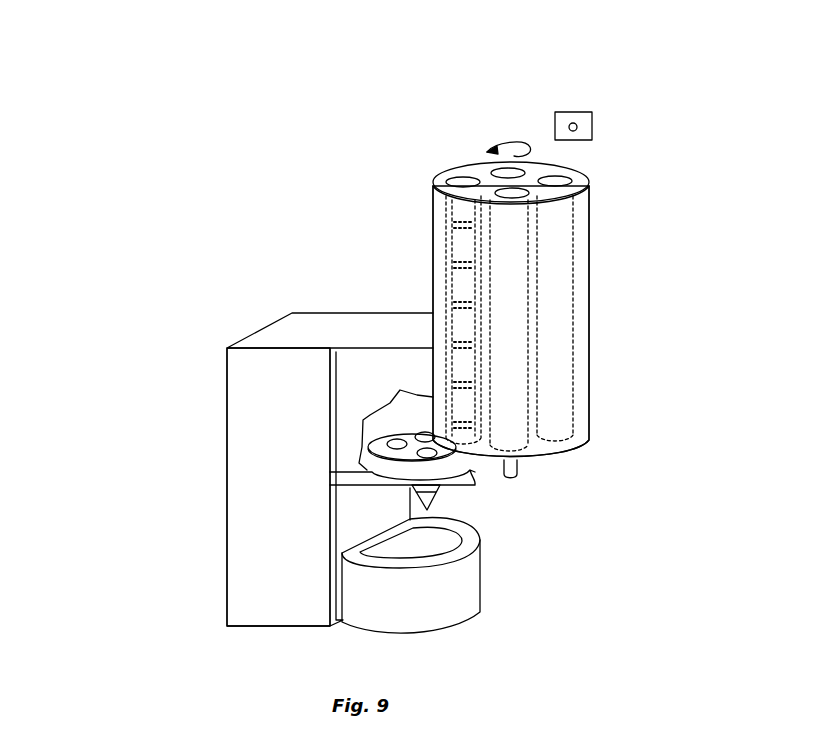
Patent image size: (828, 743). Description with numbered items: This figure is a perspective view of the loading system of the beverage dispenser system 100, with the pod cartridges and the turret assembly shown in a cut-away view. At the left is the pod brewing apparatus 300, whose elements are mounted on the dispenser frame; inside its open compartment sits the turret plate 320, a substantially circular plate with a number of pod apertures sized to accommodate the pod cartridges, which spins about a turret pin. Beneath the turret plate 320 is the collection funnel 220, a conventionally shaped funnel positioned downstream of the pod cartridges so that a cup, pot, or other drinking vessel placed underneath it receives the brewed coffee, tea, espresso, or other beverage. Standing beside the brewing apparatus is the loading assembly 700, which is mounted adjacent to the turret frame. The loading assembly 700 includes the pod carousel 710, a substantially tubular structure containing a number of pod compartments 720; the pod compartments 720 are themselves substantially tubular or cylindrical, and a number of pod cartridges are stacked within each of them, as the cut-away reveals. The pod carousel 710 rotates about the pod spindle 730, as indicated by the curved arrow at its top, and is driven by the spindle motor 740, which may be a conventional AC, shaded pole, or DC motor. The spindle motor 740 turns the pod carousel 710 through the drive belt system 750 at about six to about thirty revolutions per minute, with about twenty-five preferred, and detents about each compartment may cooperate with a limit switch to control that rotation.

The beverage dispenser system 100 is at (224, 276).
The pod brewing apparatus 300 is at (247, 455).
The turret plate 320 is at (362, 470).
The collection funnel 220 is at (438, 500).
The loading assembly 700 is at (300, 148).
The pod carousel 710 is at (590, 268).
The pod compartments 720 is at (462, 178).
The pod spindle 730 is at (508, 173).
The spindle motor 740 is at (585, 110).
The drive belt system 750 is at (578, 126).